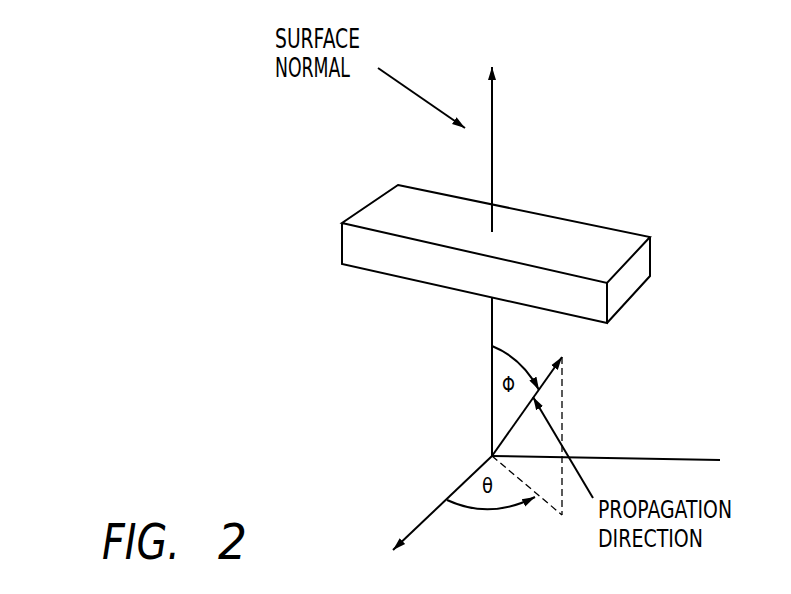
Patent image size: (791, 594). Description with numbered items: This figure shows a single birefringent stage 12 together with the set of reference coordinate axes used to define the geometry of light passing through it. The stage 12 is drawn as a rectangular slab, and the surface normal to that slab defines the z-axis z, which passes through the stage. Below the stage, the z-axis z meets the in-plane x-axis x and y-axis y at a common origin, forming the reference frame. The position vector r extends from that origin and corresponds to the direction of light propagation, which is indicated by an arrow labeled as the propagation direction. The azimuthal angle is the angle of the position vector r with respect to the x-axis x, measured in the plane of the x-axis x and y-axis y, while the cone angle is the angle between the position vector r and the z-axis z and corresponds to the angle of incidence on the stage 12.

The birefringent stage 12 is at (342, 248).
The z-axis z is at (490, 245).
The x-axis x is at (435, 513).
The y-axis y is at (619, 453).
The position vector r is at (536, 394).